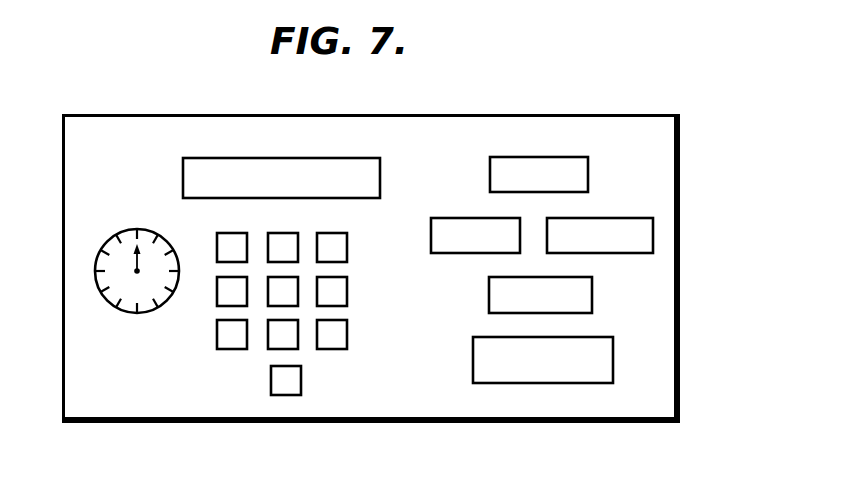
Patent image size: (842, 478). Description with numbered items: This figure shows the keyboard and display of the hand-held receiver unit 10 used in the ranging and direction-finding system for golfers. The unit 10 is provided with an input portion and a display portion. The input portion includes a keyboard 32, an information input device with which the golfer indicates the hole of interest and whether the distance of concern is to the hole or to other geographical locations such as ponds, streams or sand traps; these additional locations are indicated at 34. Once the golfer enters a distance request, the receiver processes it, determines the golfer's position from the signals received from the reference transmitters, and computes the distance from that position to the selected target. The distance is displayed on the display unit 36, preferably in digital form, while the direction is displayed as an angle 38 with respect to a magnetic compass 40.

The hand-held receiver unit 10 is at (680, 193).
The keyboard 32 is at (347, 290).
The additional locations 34 is at (473, 300).
The display unit 36 is at (286, 158).
The angle 38 is at (553, 157).
The magnetic compass 40 is at (137, 229).